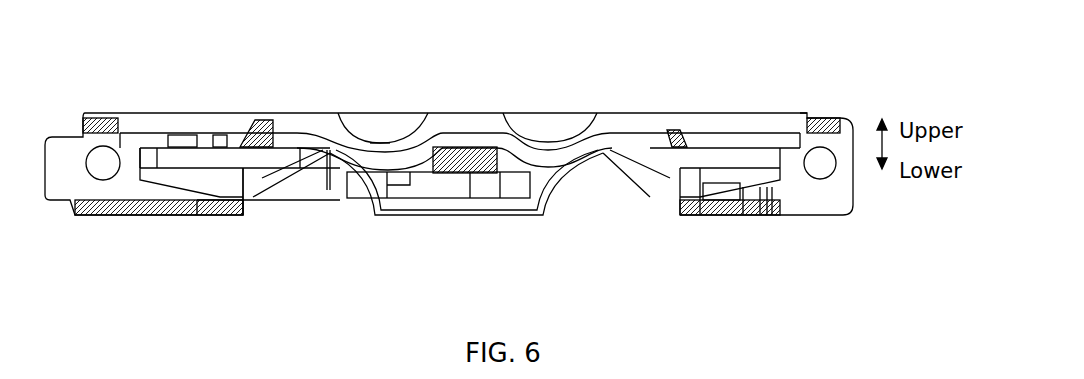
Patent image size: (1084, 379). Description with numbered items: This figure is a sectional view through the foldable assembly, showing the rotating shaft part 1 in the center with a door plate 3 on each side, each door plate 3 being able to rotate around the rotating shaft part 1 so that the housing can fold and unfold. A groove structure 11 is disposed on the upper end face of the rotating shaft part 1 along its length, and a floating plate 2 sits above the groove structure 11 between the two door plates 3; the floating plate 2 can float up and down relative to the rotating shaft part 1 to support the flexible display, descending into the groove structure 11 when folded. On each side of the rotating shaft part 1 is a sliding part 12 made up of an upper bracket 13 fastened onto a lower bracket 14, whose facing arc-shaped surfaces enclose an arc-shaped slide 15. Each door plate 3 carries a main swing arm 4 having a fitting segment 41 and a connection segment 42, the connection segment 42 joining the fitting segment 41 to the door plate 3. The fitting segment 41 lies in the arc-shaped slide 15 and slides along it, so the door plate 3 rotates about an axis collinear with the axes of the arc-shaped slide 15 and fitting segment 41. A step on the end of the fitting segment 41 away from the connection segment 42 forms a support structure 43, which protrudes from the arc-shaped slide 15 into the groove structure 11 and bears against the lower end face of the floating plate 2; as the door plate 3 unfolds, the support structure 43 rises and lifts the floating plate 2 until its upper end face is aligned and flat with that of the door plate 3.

The rotating shaft part 1 is at (448, 210).
The groove structure 11 is at (470, 145).
The sliding part 12 is at (437, 85).
The upper bracket 13 is at (400, 107).
The lower bracket 14 is at (324, 110).
The arc-shaped slide 15 is at (343, 110).
The floating plate 2 is at (478, 118).
The door plate 3 is at (193, 111).
The main swing arm 4 is at (444, 226).
The fitting segment 41 is at (385, 153).
The connection segment 42 is at (263, 157).
The support structure 43 is at (432, 130).